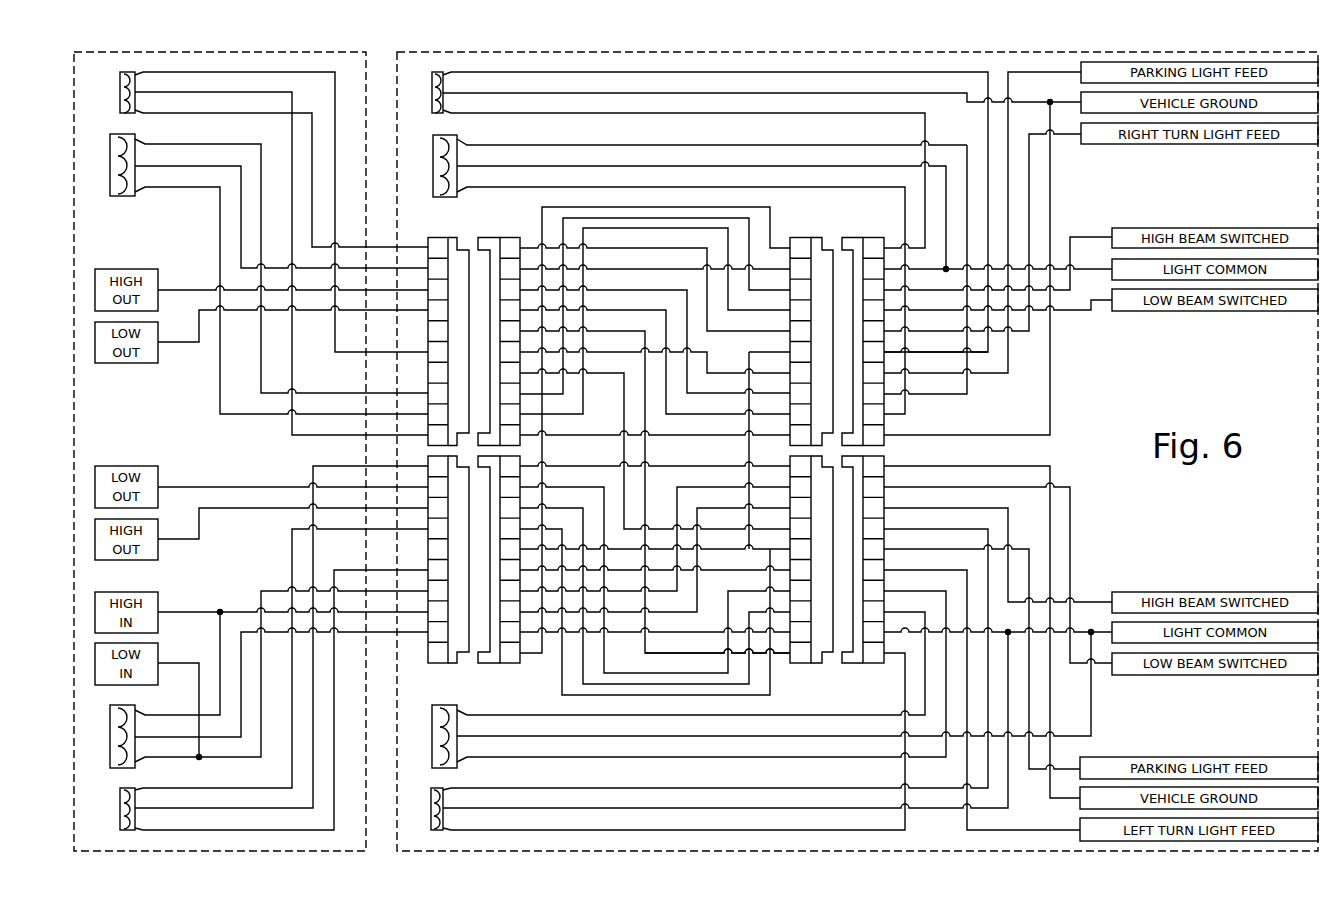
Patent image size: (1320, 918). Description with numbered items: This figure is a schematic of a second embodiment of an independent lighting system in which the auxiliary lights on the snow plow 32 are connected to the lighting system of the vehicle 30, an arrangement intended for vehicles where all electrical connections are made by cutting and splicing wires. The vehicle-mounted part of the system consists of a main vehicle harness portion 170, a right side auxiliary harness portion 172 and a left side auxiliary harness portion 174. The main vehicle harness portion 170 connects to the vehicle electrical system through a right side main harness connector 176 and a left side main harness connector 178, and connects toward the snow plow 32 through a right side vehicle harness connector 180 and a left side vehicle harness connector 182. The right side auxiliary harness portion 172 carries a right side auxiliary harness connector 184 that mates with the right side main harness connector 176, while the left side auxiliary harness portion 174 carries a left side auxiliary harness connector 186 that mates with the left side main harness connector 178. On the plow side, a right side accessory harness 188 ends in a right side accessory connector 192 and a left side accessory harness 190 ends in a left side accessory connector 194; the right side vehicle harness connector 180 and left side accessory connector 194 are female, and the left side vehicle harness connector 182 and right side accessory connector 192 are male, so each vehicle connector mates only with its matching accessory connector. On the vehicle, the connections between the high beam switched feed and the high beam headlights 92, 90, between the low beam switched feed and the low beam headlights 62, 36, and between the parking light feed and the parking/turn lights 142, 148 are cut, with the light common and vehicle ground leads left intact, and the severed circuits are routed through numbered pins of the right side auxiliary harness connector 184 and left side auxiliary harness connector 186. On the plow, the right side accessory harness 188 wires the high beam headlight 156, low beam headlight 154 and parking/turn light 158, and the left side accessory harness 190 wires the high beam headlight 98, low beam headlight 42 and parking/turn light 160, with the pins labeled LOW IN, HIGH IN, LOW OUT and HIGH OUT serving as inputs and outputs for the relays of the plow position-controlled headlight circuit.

The vehicle 30 is at (397, 166).
The snow plow 32 is at (365, 92).
The low beam headlight 36 is at (448, 768).
The low beam headlight 42 is at (127, 768).
The low beam headlight 62 is at (448, 197).
The high beam headlight 90 is at (430, 731).
The high beam headlight 92 is at (430, 170).
The high beam headlight 98 is at (124, 736).
The parking/turn light 142 is at (443, 75).
The parking/turn light 148 is at (443, 830).
The low beam headlight 154 is at (127, 197).
The high beam headlight 156 is at (124, 156).
The parking/turn light 158 is at (135, 76).
The parking/turn light 160 is at (127, 830).
The main vehicle harness portion 170 is at (782, 680).
The right side auxiliary harness portion 172 is at (981, 384).
The left side auxiliary harness portion 174 is at (1084, 529).
The right side main harness connector 176 is at (800, 237).
The left side main harness connector 178 is at (800, 663).
The right side vehicle harness connector 180 is at (490, 237).
The left side vehicle harness connector 182 is at (490, 663).
The right side auxiliary harness connector 184 is at (853, 237).
The left side auxiliary harness connector 186 is at (853, 663).
The right side accessory harness 188 is at (266, 427).
The left side accessory harness 190 is at (266, 569).
The right side accessory connector 192 is at (438, 237).
The left side accessory connector 194 is at (438, 663).